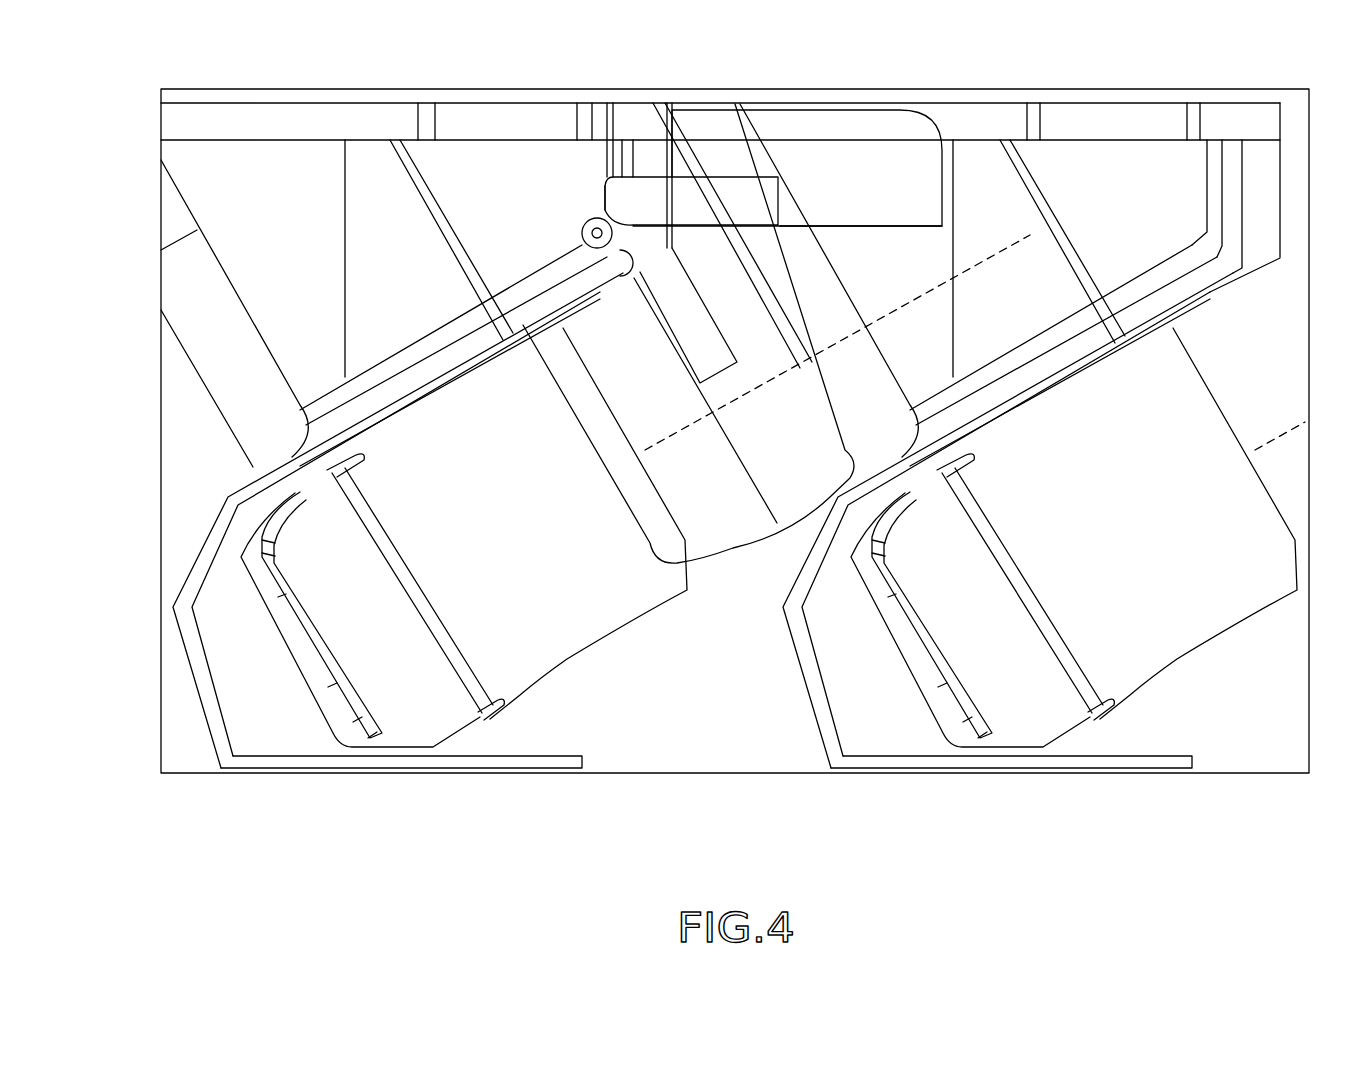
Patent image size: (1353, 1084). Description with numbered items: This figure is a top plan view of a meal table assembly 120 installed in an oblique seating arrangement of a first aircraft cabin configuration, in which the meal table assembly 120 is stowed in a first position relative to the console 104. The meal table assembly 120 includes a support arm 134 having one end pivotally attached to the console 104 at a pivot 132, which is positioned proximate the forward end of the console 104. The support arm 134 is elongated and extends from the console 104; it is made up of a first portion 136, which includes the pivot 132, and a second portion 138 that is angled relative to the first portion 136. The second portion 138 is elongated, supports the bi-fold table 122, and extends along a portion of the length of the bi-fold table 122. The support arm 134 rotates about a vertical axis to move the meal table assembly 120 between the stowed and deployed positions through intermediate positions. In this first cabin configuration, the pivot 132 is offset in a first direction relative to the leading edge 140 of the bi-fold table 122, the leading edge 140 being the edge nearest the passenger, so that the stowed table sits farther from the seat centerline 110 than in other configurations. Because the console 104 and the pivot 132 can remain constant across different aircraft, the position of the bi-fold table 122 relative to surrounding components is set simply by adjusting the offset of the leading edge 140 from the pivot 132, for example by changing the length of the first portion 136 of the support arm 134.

The console 104 is at (463, 157).
The seat centerline 110 is at (1005, 250).
The meal table assembly 120 is at (812, 126).
The bi-fold table 122 is at (787, 168).
The pivot 132 is at (593, 222).
The support arm 134 is at (712, 176).
The first portion 136 is at (594, 226).
The second portion 138 is at (760, 205).
The leading edge 140 is at (905, 228).